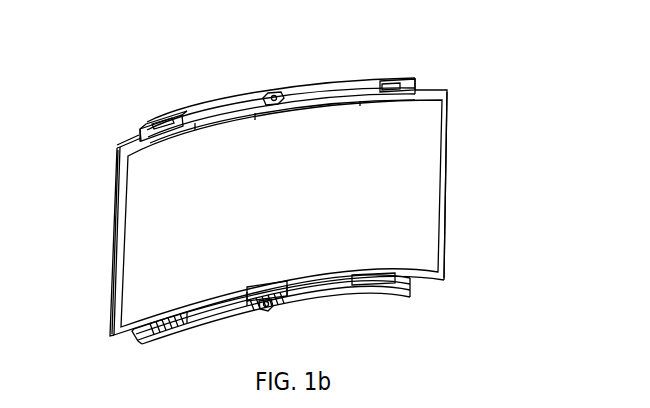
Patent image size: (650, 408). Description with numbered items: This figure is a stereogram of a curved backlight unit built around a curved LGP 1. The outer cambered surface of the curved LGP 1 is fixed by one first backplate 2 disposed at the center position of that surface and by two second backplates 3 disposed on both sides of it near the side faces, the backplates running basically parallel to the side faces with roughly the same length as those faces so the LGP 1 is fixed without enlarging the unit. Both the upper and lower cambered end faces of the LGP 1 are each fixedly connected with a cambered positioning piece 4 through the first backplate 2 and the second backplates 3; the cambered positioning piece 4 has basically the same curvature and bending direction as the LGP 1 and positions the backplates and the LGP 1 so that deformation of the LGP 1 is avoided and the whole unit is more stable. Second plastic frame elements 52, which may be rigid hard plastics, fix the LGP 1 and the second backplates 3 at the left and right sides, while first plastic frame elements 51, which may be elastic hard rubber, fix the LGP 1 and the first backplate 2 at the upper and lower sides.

The curved LGP 1 is at (398, 145).
The first backplate 2 is at (280, 110).
The second backplate 3 is at (167, 117).
The cambered positioning piece 4 is at (328, 83).
The first plastic frame element 51 is at (137, 137).
The second plastic frame element 52 is at (115, 240).